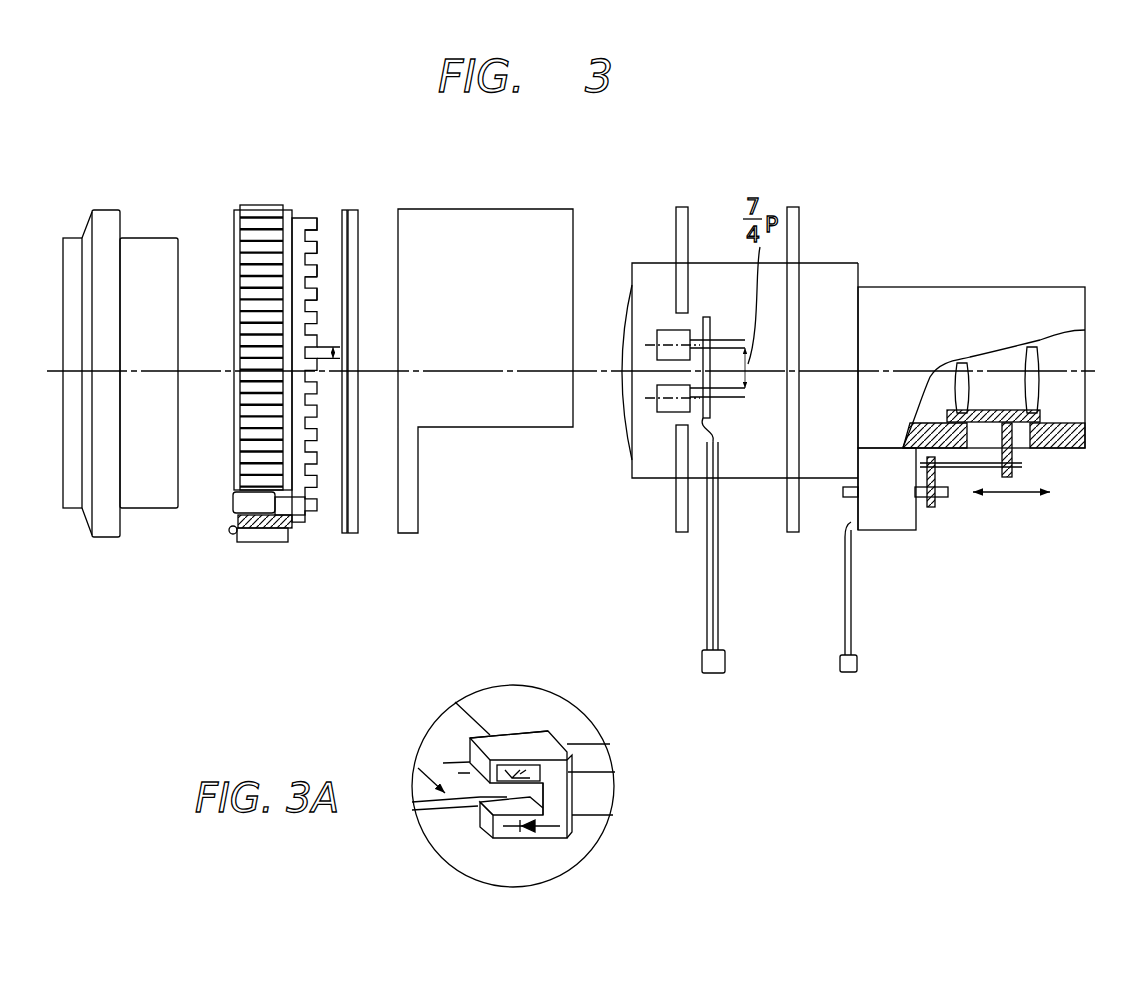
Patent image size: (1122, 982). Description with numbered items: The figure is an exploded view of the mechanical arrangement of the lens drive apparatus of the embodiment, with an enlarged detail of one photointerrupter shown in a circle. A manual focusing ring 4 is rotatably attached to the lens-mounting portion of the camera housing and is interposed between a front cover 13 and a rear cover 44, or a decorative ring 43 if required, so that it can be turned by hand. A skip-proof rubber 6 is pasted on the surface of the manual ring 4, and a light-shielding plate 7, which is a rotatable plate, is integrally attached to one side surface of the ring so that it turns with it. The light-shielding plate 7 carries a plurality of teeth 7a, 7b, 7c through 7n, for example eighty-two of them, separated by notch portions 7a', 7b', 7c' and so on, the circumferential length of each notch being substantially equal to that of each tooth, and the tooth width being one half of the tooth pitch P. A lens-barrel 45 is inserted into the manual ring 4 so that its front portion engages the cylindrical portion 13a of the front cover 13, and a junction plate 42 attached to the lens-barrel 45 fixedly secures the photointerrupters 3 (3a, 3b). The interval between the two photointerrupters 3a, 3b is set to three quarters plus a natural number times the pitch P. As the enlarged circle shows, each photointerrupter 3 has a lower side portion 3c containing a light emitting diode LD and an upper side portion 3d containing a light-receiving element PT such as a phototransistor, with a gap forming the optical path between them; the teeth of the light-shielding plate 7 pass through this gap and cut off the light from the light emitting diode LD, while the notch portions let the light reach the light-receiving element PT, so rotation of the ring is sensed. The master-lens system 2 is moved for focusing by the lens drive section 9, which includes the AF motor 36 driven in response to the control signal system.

In FIG. 3, the front cover 13 is at (84, 237).
In FIG. 3, the cylindrical portion 13a is at (157, 238).
In FIG. 3, the manual focusing ring 4 is at (246, 204).
In FIG. 3, the skip-proof rubber 6 is at (268, 212).
In FIG. 3, the light-shielding plate 7 is at (297, 226).
In FIG. 3A, the light-shielding plate 7 is at (435, 762).
In FIG. 3, the tooth 7n is at (310, 222).
In FIG. 3, the decorative ring 43 is at (352, 208).
In FIG. 3, the rear cover 44 is at (556, 208).
In FIG. 3, the tooth 7a is at (379, 249).
In FIG. 3, the notch portion 7a' is at (393, 266).
In FIG. 3, the tooth 7b is at (380, 281).
In FIG. 3, the notch portion 7b' is at (393, 295).
In FIG. 3, the tooth 7c is at (379, 308).
In FIG. 3, the notch portion 7c' is at (392, 323).
In FIG. 3, the pitch of the teeth P is at (336, 352).
In FIG. 3, the photointerrupter 3a is at (670, 332).
In FIG. 3, the photointerrupter 3b is at (660, 400).
In FIG. 3, the junction plate 42 is at (707, 316).
In FIG. 3, the lens-barrel 45 is at (846, 262).
In FIG. 3, the master-lens system 2 is at (997, 380).
In FIG. 3, the AF motor 36 is at (897, 515).
In FIG. 3, the lens drive section 9 is at (965, 504).
In FIG. 3A, the photointerrupter 3 is at (562, 802).
In FIG. 3A, the lower side portion 3c is at (540, 840).
In FIG. 3A, the upper side portion 3d is at (510, 740).
In FIG. 3A, the light-receiving element PT is at (550, 769).
In FIG. 3A, the light emitting diode LD is at (508, 843).